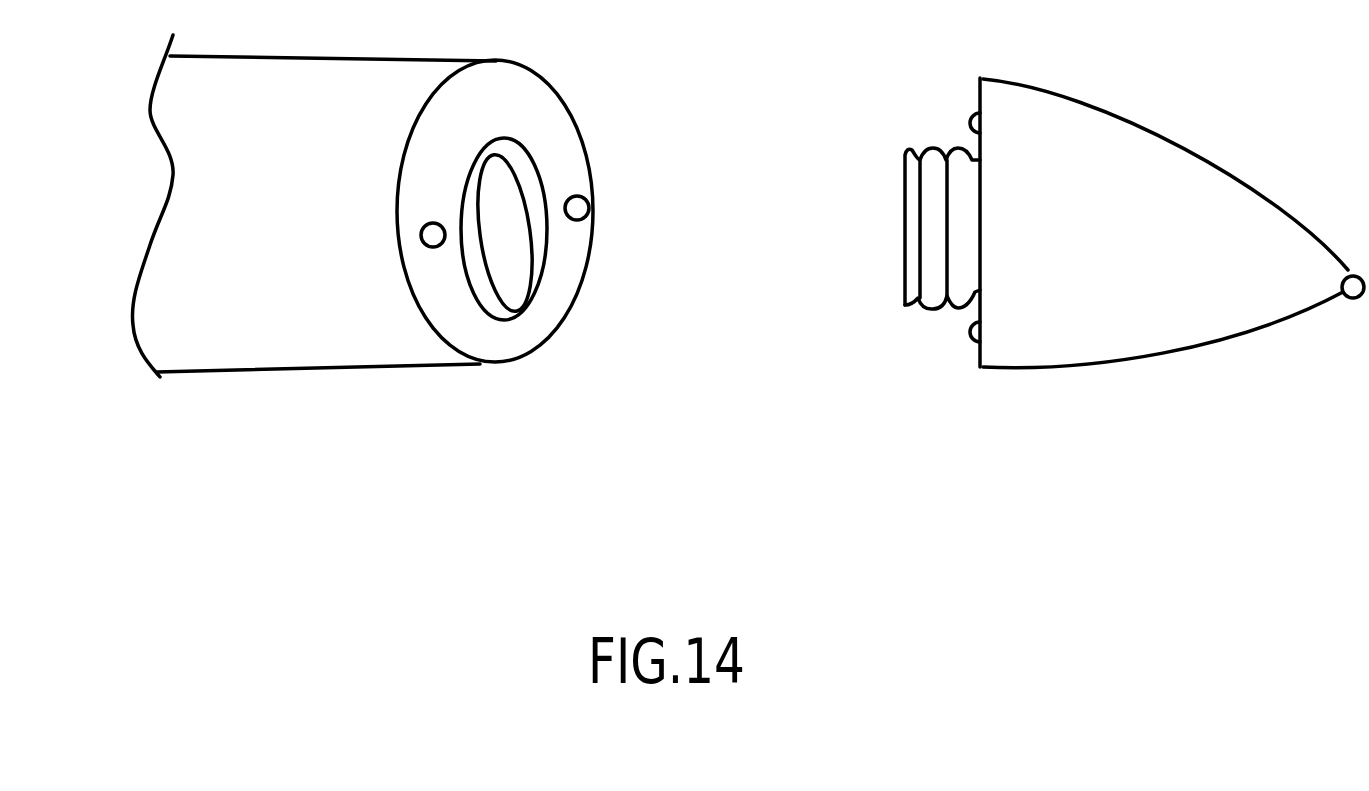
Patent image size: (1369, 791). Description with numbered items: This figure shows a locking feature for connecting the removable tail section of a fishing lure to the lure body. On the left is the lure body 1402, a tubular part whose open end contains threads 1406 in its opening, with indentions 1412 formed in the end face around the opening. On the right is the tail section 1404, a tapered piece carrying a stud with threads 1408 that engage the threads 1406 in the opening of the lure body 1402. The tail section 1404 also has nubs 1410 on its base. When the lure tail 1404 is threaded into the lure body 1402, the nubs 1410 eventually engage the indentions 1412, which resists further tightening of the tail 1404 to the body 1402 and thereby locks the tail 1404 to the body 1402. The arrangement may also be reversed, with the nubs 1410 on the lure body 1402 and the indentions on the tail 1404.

The lure body 1402 is at (375, 353).
The tail section 1404 is at (1070, 323).
The threads 1406 is at (530, 267).
The threads 1408 is at (937, 232).
The nubs 1410 is at (972, 117).
The indentions 1412 is at (590, 207).